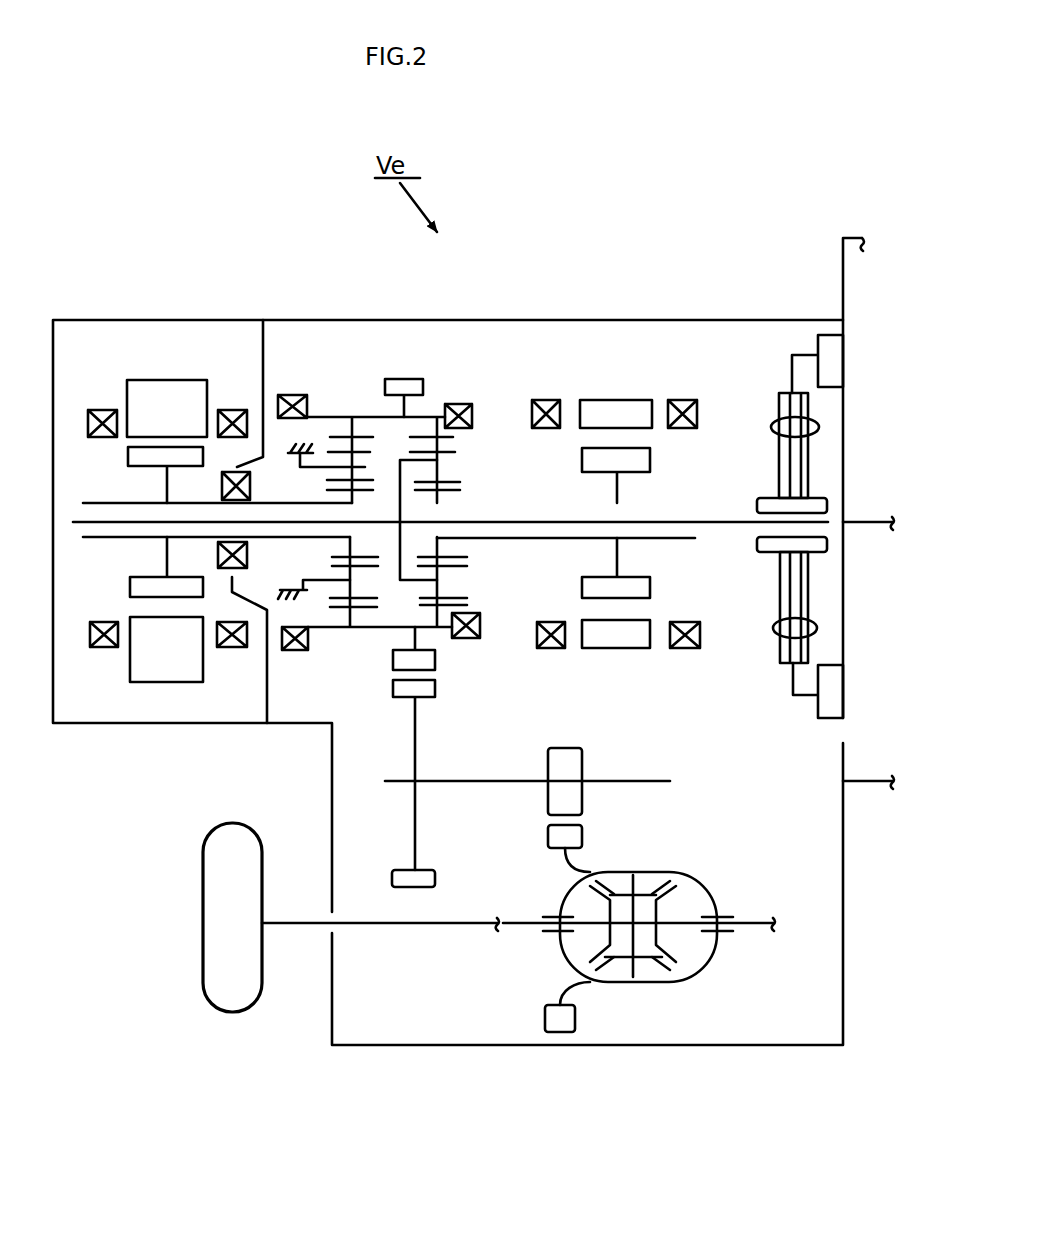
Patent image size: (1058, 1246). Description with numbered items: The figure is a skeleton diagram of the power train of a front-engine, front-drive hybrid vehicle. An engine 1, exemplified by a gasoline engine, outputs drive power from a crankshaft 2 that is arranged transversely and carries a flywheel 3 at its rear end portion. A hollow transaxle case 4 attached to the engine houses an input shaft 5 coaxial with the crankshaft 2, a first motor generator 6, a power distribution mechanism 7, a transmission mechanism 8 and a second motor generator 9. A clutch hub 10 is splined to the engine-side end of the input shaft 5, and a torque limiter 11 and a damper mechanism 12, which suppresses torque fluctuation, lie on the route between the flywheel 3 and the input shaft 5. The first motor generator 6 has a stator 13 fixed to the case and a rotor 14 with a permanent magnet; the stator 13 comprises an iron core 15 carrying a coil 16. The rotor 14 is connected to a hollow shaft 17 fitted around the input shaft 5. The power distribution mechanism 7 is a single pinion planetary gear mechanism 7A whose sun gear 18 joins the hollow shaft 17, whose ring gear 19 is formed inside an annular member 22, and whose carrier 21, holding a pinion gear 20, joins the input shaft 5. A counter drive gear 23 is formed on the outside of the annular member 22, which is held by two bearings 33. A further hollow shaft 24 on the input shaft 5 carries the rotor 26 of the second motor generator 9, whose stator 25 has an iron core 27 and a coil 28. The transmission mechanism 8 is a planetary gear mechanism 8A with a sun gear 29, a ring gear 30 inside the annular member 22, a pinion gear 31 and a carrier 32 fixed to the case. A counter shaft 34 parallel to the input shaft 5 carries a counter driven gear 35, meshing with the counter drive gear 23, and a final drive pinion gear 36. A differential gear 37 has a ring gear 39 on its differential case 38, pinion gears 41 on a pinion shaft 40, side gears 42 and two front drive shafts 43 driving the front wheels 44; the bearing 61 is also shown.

The engine 1 is at (840, 268).
The crankshaft 2 is at (870, 522).
The flywheel 3 is at (843, 645).
The transaxle case 4 is at (370, 318).
The input shaft 5 is at (710, 522).
The first motor generator 6 is at (700, 618).
The power distribution mechanism 7 is at (437, 405).
The planetary gear mechanism 7A is at (472, 602).
The transmission mechanism 8 is at (352, 635).
The planetary gear mechanism 8A is at (251, 558).
The second motor generator 9 is at (118, 447).
The clutch hub 10 is at (757, 500).
The torque limiter 11 is at (815, 712).
The damper mechanism 12 is at (772, 642).
The stator 13 is at (655, 650).
The rotor 14 is at (640, 462).
The iron core 15 is at (635, 630).
The coil 16 is at (697, 412).
The hollow shaft 17 is at (540, 540).
The sun gear 18 is at (465, 558).
The ring gear 19 is at (455, 440).
The pinion gear 20 is at (462, 488).
The carrier 21 is at (467, 578).
The annular member 22 is at (385, 417).
The counter drive gear 23 is at (435, 660).
The hollow shaft 24 is at (130, 540).
The stator 25 is at (128, 682).
The rotor 26 is at (150, 466).
The iron core 27 is at (185, 657).
The coil 28 is at (103, 410).
The sun gear 29 is at (328, 486).
The ring gear 30 is at (372, 602).
The pinion gear 31 is at (328, 574).
The carrier 32 is at (355, 467).
The bearings 33 is at (292, 395).
The counter shaft 34 is at (625, 781).
The counter driven gear 35 is at (425, 878).
The final drive pinion gear 36 is at (565, 762).
The differential gear 37 is at (712, 968).
The differential case 38 is at (667, 872).
The ring gear 39 is at (575, 1018).
The pinion shaft 40 is at (636, 872).
The pinion gears 41 is at (600, 888).
The side gears 42 is at (700, 882).
The front drive shafts 43 is at (505, 920).
The front wheels 44 is at (226, 845).
The bearing 61 is at (222, 486).